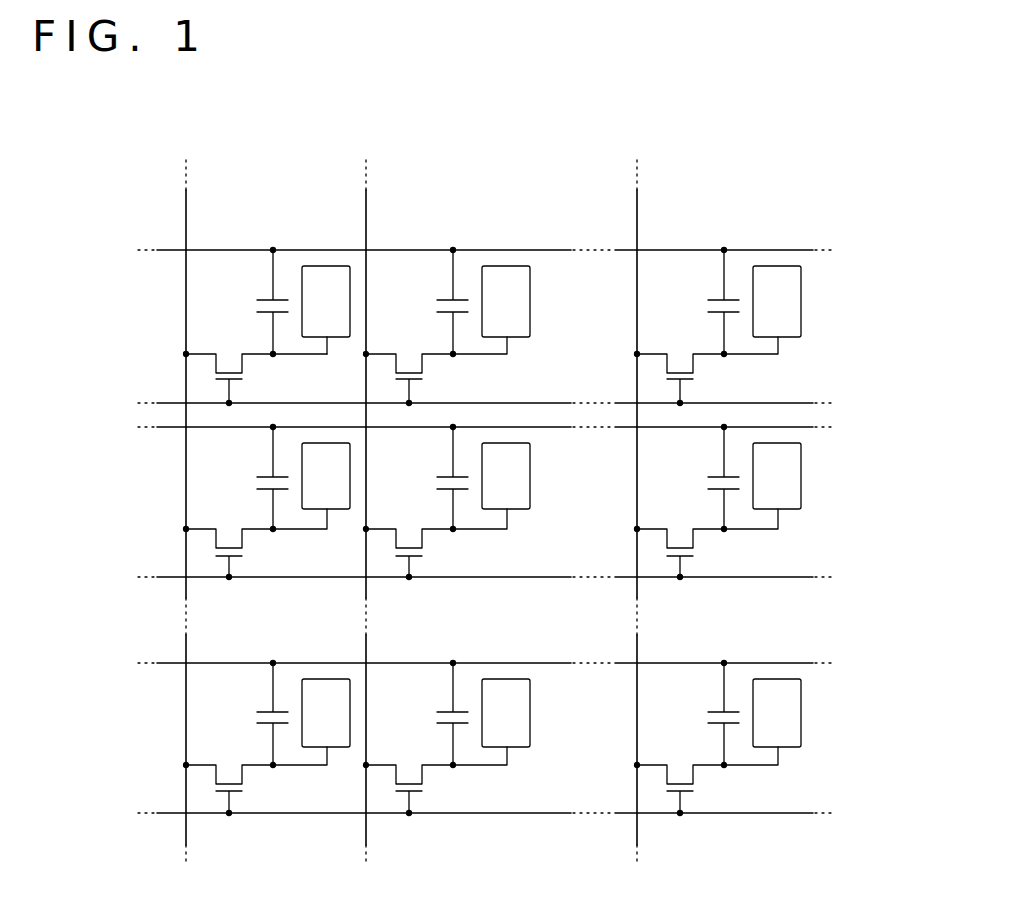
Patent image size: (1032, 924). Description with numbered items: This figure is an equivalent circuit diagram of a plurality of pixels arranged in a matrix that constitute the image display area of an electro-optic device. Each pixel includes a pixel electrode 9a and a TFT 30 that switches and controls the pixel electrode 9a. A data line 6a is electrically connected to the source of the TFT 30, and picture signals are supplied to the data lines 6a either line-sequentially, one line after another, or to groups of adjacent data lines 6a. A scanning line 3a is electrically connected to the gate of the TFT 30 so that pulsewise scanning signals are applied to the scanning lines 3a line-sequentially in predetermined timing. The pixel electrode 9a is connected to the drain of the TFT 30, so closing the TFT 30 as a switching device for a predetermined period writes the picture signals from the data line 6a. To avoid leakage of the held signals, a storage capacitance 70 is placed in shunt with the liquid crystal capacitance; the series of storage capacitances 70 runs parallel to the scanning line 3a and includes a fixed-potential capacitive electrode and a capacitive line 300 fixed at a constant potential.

The data line 6a is at (670, 190).
The capacitive line 300 is at (840, 685).
The scanning line 3a is at (424, 380).
The storage capacitance 70 is at (256, 309).
The TFT 30 is at (244, 376).
The pixel electrode 9a is at (338, 338).